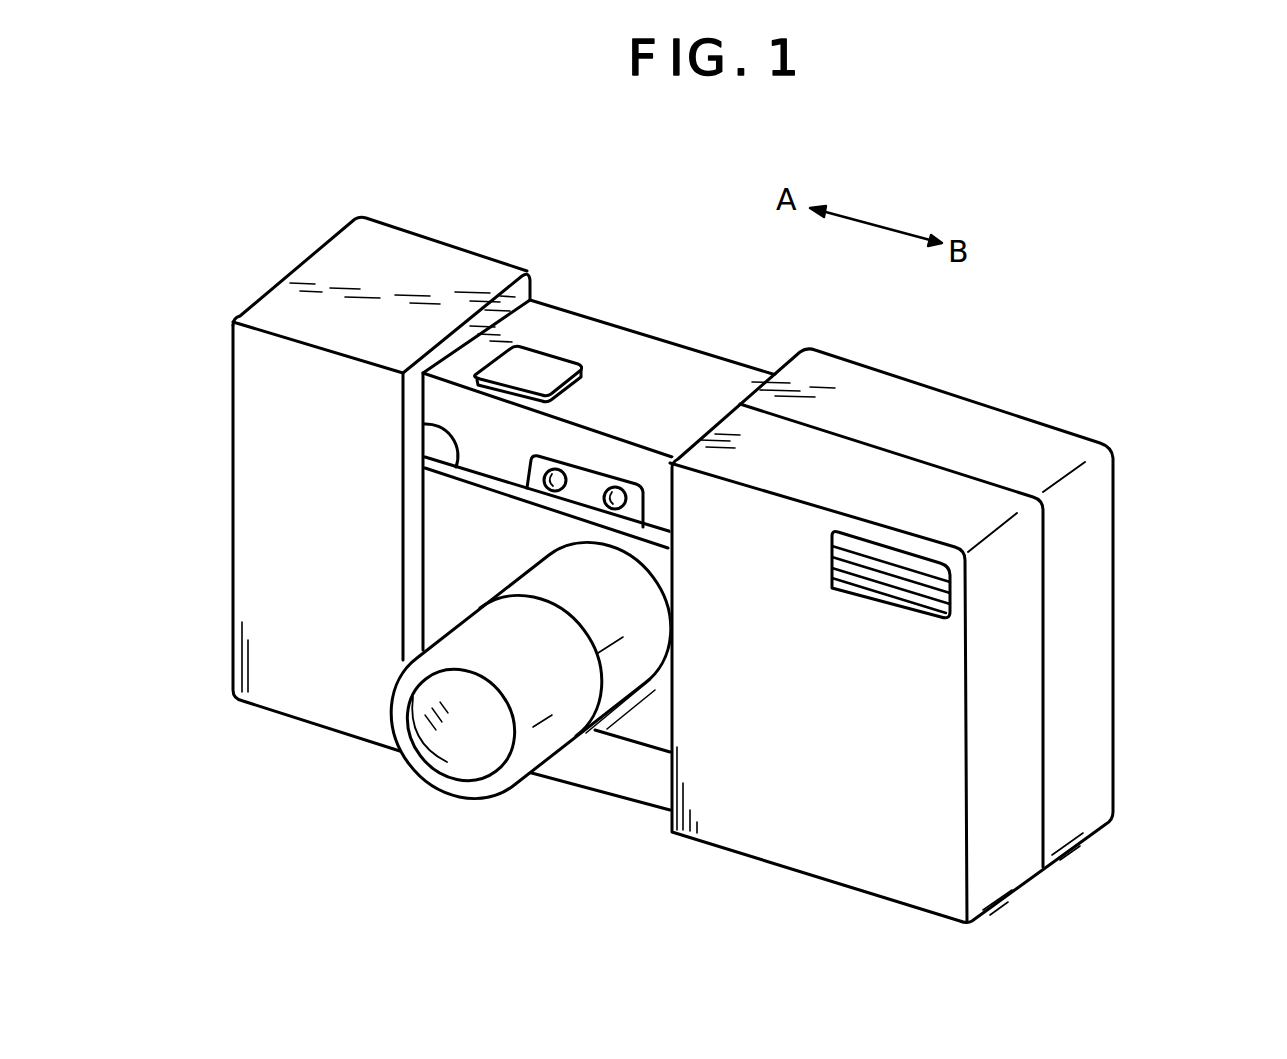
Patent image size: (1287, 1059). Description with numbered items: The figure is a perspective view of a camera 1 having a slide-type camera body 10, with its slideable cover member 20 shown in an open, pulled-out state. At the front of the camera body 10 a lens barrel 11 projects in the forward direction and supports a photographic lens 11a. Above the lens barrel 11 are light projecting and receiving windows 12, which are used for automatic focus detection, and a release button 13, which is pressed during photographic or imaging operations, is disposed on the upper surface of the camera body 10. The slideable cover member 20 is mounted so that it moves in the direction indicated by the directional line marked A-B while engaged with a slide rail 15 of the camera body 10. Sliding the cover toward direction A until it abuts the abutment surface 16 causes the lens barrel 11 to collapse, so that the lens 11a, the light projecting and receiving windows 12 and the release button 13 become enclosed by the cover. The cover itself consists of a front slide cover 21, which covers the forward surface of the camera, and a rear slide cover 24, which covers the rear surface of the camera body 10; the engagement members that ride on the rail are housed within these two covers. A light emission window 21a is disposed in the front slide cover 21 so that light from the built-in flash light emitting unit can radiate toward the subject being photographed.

The camera 1 is at (737, 567).
The camera body 10 is at (567, 555).
The lens barrel 11 is at (527, 704).
The photographic lens 11a is at (467, 765).
The light projecting and receiving windows 12 is at (617, 496).
The release button 13 is at (552, 377).
The slide rail 15 is at (424, 425).
The abutment surface 16 is at (501, 312).
The slideable cover member 20 is at (926, 610).
The front slide cover 21 is at (966, 610).
The light emission window 21a is at (893, 577).
The rear slide cover 24 is at (1092, 630).